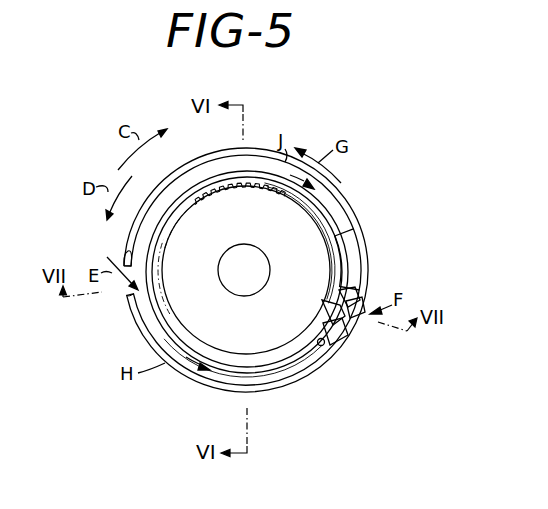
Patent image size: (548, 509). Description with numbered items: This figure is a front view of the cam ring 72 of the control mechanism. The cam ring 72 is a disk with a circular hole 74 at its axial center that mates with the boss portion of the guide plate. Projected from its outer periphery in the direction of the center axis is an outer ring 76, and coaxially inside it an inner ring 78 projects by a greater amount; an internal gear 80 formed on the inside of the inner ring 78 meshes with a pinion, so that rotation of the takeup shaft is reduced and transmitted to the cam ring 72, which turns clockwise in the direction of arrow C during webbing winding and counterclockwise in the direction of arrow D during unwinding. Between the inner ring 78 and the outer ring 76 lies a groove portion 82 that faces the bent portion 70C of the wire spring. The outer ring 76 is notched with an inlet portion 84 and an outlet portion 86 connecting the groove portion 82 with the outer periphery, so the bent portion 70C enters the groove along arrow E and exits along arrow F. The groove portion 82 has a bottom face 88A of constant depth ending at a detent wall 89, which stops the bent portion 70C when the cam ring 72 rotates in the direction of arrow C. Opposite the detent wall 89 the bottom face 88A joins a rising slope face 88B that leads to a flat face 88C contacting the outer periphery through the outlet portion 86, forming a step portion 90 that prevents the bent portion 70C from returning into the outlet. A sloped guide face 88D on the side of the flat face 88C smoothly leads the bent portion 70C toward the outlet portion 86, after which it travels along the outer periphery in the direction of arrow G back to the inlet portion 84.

The bent portion 70C is at (332, 367).
The cam ring 72 is at (178, 378).
The circular hole 74 is at (218, 264).
The outer ring 76 is at (205, 375).
The inner ring 78 is at (246, 270).
The internal gear 80 is at (196, 199).
The groove portion 82 is at (153, 332).
The inlet portion 84 is at (127, 300).
The outlet portion 86 is at (357, 320).
The bottom face 88A is at (278, 375).
The slope face 88B is at (353, 256).
The flat face 88C is at (327, 290).
The guide face 88D is at (330, 313).
The detent wall 89 is at (328, 348).
The step portion 90 is at (368, 295).